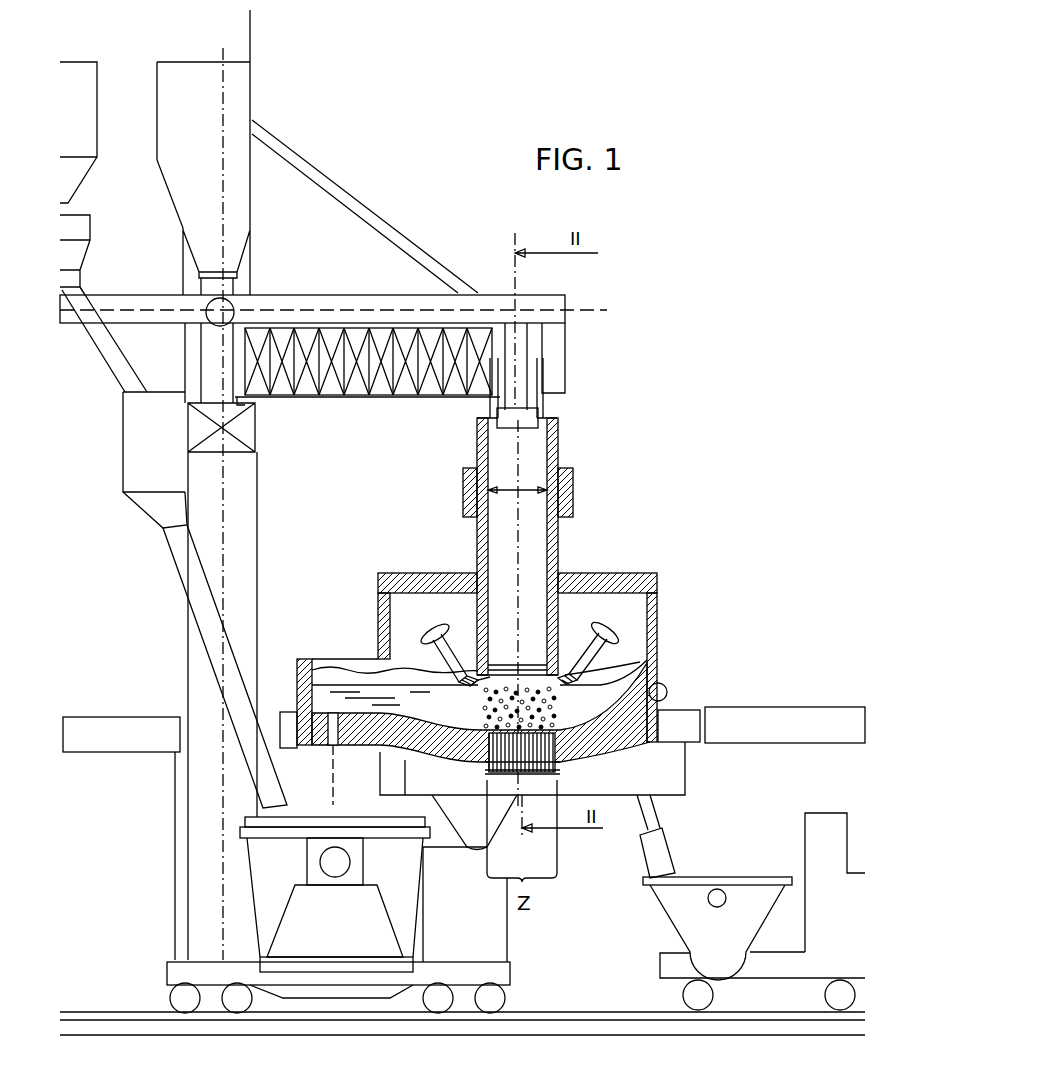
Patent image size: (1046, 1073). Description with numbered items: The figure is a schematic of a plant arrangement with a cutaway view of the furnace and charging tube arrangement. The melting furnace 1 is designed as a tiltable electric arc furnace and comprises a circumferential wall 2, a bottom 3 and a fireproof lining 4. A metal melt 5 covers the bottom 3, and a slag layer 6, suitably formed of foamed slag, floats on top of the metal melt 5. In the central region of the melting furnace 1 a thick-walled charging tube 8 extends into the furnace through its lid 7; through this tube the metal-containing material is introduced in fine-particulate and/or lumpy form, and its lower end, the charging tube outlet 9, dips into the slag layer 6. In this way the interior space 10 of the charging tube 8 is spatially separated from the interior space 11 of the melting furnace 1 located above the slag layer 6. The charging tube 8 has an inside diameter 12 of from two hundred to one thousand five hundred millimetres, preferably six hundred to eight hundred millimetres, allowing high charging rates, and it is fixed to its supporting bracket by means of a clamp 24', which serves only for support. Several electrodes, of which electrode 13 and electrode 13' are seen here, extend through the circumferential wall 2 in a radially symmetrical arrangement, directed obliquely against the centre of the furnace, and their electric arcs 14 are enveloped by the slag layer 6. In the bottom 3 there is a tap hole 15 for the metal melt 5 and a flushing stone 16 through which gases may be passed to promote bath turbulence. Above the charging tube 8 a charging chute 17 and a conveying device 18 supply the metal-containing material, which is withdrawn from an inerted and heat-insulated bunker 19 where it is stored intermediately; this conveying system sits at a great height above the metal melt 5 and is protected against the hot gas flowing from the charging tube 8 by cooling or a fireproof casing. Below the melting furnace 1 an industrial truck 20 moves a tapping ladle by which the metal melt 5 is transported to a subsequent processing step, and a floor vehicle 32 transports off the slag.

The melting furnace 1 is at (510, 691).
The circumferential wall 2 is at (383, 622).
The bottom 3 is at (633, 753).
The fireproof lining 4 is at (650, 713).
The metal melt 5 is at (461, 714).
The slag layer 6 is at (333, 673).
The lid 7 is at (620, 582).
The charging tube 8 is at (477, 552).
The charging tube outlet 9 is at (477, 653).
The interior space of the charging tube 10 is at (535, 548).
The interior space of the melting furnace 11 is at (637, 628).
The inside diameter 12 is at (508, 490).
The electrode 13 is at (412, 653).
The electrode 13' is at (650, 655).
The electric arcs 14 is at (570, 670).
The tap hole 15 is at (330, 742).
The flushing stone 16 is at (497, 748).
The charging chute 17 is at (543, 407).
The conveying device 18 is at (548, 302).
The bunker 19 is at (238, 113).
The industrial truck 20 is at (373, 942).
The clamp 24' is at (535, 484).
The floor vehicle 32 is at (805, 838).